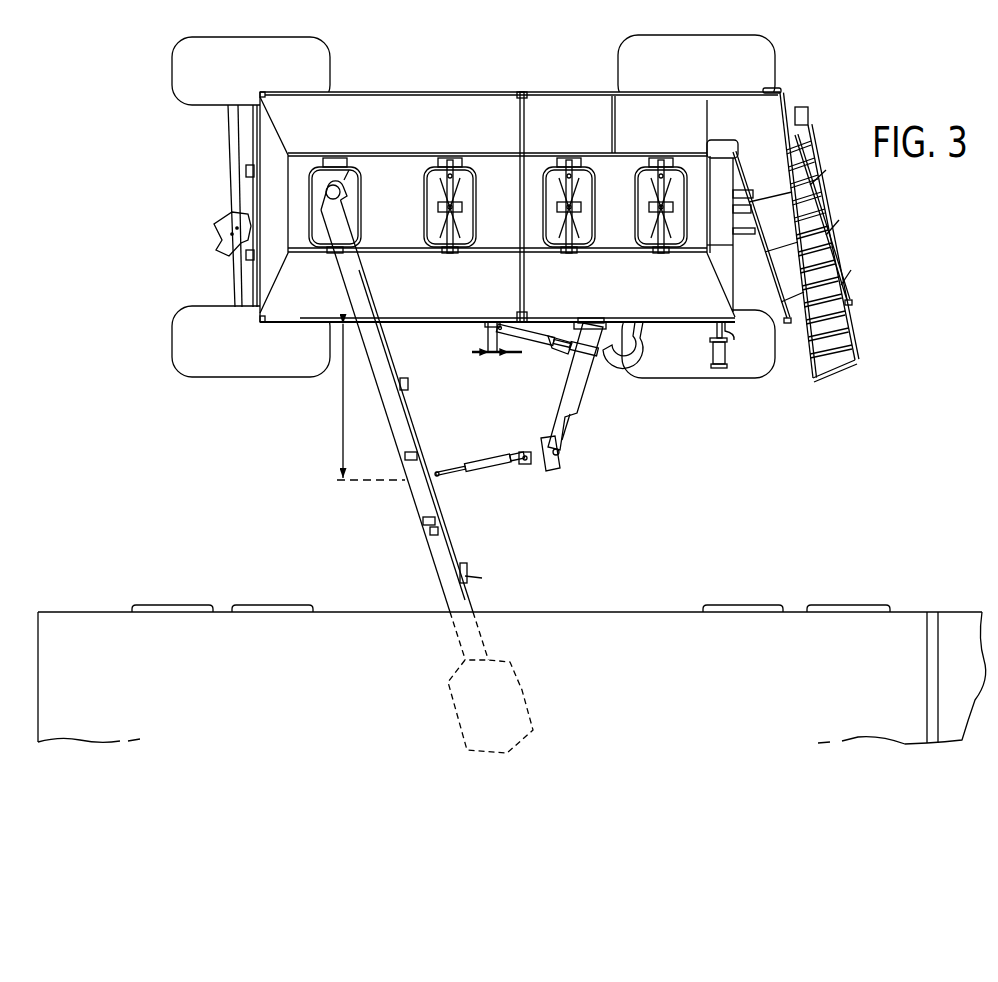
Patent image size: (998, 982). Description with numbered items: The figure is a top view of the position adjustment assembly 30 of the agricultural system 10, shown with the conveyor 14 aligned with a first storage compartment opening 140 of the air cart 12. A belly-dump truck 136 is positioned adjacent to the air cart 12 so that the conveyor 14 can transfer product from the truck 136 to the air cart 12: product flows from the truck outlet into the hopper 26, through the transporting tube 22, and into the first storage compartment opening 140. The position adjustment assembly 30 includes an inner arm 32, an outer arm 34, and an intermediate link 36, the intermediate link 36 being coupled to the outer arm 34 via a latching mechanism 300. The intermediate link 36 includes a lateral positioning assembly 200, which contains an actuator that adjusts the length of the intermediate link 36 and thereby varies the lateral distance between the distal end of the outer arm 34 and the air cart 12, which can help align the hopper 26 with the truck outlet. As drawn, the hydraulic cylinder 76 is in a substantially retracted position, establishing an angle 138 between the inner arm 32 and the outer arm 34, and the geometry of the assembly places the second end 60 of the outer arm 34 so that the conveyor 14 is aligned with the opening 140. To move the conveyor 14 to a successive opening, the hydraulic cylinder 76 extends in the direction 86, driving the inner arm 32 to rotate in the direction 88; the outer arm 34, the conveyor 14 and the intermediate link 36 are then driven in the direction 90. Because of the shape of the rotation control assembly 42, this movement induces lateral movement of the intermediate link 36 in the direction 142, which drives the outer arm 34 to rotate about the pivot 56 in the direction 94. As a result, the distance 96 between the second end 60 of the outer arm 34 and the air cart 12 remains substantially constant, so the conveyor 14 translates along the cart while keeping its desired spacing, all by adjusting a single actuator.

The agricultural system 10 is at (125, 413).
The air cart 12 is at (132, 210).
The conveyor 14 is at (260, 472).
The transporting tube 22 is at (432, 558).
The hopper 26 is at (522, 690).
The position adjustment assembly 30 is at (563, 486).
The inner arm 32 is at (583, 322).
The outer arm 34 is at (476, 477).
The intermediate link 36 is at (586, 400).
The rotation control assembly 42 is at (628, 318).
The pivot 56 is at (528, 466).
The second end of the outer arm 60 is at (437, 472).
The hydraulic cylinder 76 is at (538, 337).
The direction 86 is at (640, 358).
The direction 88 is at (530, 340).
The direction 90 is at (593, 467).
The direction 94 is at (536, 484).
The distance 96 is at (343, 404).
The belly-dump truck 136 is at (859, 655).
The angle 138 is at (538, 428).
The first storage compartment opening 140 is at (352, 183).
The direction 142 is at (613, 318).
The lateral positioning assembly 200 is at (588, 428).
The latching mechanism 300 is at (566, 458).